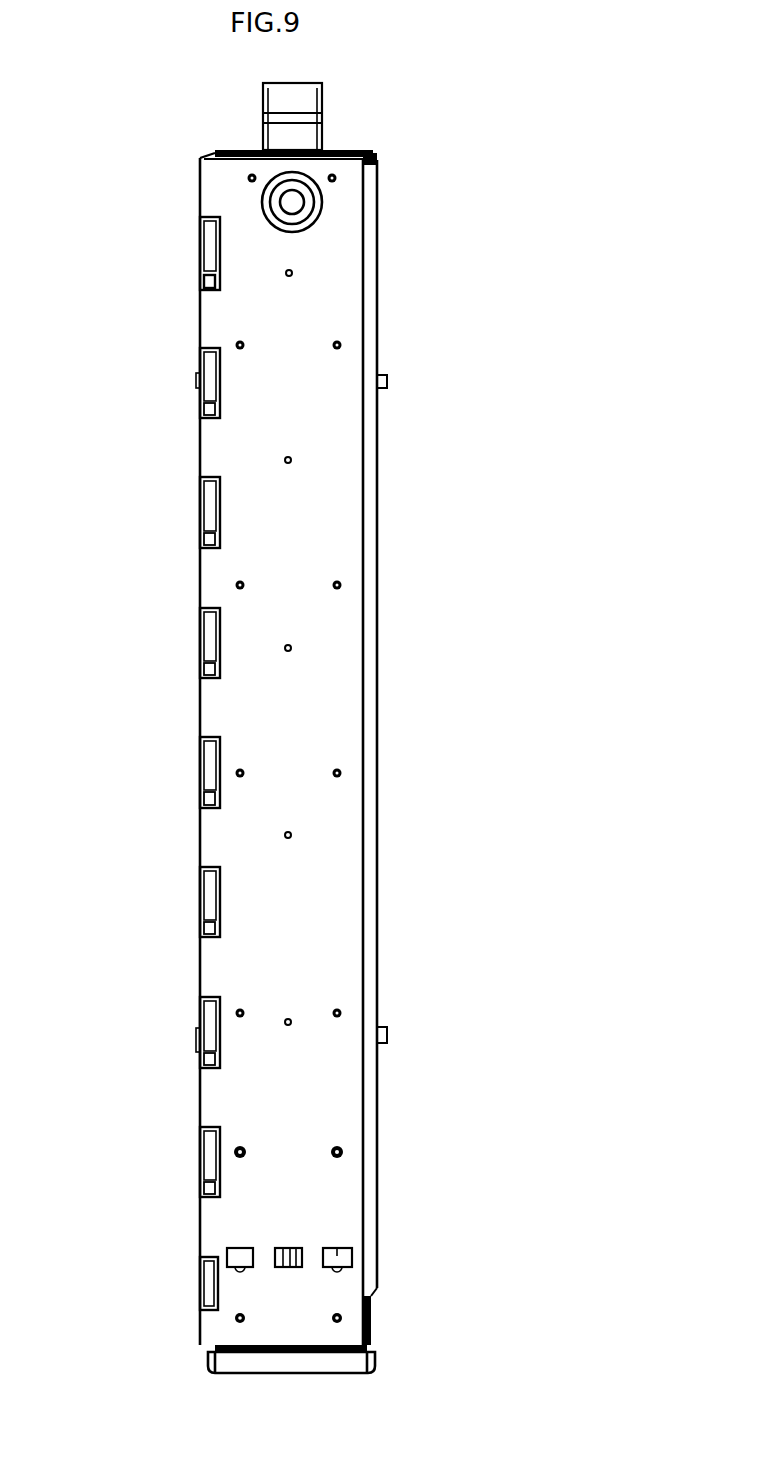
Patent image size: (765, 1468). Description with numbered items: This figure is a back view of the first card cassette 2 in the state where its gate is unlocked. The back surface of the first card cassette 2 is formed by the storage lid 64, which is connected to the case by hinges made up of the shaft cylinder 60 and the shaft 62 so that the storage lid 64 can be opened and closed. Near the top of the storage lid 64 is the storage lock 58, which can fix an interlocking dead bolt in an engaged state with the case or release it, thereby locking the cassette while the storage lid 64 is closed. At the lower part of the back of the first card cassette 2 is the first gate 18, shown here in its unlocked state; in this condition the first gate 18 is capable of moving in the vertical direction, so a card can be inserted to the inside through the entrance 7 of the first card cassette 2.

The first card cassette 2 is at (215, 154).
The storage lock 58 is at (308, 190).
The shaft cylinder 60 is at (213, 242).
The shaft 62 is at (203, 280).
The storage lid 64 is at (328, 822).
The first gate 18 is at (255, 1348).
The entrance 7 is at (257, 1363).